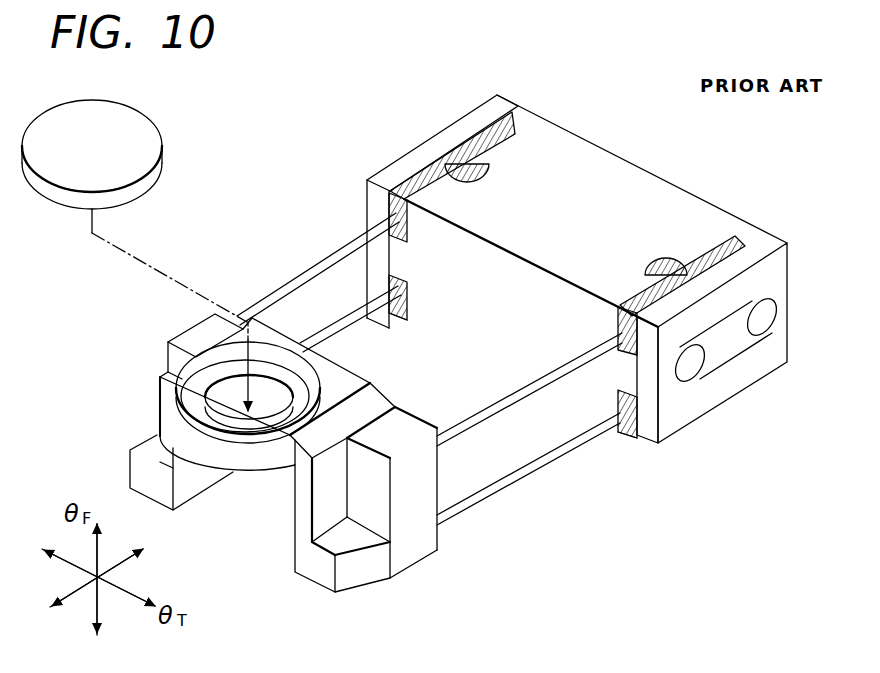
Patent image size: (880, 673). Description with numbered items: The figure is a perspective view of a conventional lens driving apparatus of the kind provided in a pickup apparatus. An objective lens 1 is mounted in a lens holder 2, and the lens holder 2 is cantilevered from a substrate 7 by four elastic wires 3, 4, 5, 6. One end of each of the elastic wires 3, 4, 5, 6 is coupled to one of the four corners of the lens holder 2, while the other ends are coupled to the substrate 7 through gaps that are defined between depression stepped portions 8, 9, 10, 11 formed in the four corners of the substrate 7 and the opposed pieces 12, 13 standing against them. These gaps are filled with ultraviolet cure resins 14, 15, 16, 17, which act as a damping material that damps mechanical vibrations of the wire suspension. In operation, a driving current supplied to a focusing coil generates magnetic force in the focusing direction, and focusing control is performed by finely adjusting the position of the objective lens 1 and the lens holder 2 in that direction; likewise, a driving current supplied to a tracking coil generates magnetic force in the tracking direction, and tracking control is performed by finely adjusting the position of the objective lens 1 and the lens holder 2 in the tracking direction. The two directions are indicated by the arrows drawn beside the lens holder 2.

The objective lens 1 is at (125, 122).
The lens holder 2 is at (298, 541).
The elastic wire 3 is at (292, 278).
The elastic wire 4 is at (340, 320).
The elastic wire 5 is at (492, 408).
The elastic wire 6 is at (502, 492).
The substrate 7 is at (612, 163).
The depression stepped portion 8 is at (407, 234).
The depression stepped portion 9 is at (409, 300).
The depression stepped portion 10 is at (608, 303).
The depression stepped portion 11 is at (626, 398).
The opposed piece 12 is at (395, 168).
The opposed piece 13 is at (770, 284).
The ultraviolet cure resin 14 is at (468, 150).
The ultraviolet cure resin 15 is at (402, 312).
The ultraviolet cure resin 16 is at (672, 260).
The ultraviolet cure resin 17 is at (630, 436).